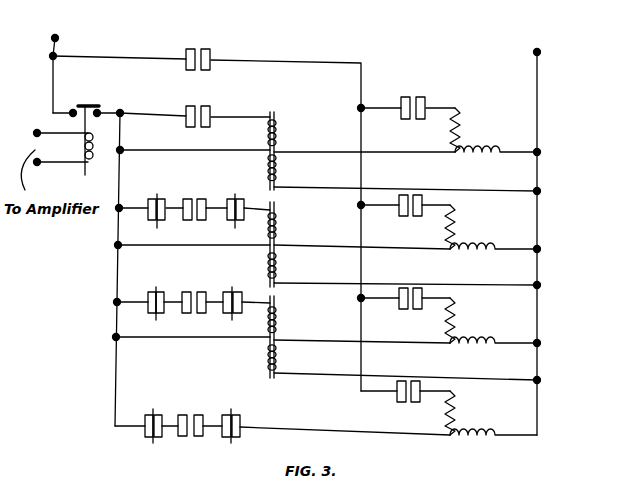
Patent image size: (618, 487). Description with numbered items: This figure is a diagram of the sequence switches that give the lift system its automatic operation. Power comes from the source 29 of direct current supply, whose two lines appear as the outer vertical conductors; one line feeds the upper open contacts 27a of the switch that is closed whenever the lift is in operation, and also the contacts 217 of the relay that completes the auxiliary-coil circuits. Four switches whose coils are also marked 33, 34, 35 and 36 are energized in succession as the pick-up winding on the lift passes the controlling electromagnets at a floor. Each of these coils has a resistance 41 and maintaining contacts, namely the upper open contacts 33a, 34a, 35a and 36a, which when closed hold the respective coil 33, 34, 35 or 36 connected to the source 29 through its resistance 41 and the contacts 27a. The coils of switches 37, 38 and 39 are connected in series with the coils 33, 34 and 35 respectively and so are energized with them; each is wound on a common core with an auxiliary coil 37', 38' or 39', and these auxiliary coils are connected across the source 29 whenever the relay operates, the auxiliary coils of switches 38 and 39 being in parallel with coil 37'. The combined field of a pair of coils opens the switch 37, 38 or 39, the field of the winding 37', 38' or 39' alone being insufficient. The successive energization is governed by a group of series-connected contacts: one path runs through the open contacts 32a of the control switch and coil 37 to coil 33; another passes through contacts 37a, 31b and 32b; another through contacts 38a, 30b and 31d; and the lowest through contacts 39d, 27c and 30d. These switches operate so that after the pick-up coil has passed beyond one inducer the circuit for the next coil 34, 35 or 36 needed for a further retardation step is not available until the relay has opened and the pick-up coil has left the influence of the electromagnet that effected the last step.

The source of direct current supply 29 is at (55, 38).
The switch 217 is at (101, 101).
The upper open contacts of switch 27 27a is at (213, 40).
The open contacts of control switch 32 32a is at (207, 100).
The operating coil of switch 37 is at (361, 136).
The auxiliary coil 37' is at (328, 170).
The switch 37a is at (148, 202).
The switch 31b is at (204, 193).
The variable condenser 32b is at (246, 216).
The operating coil of switch 38 is at (359, 231).
The auxiliary coil 38' is at (327, 265).
The switch 38a is at (148, 294).
The switch 30b is at (197, 292).
The variable condenser 31d is at (233, 292).
The operating coil of switch 39 is at (359, 322).
The auxiliary coil 39' is at (326, 358).
The variable condenser 39d is at (145, 418).
The switch 27c is at (195, 414).
The variable condenser 30d is at (242, 425).
The upper open contacts of switch 33 33a is at (415, 95).
The resistance 41 is at (461, 120).
The switch 33 coil 33 is at (477, 160).
The maintaining contacts of switch 34 34a is at (406, 217).
The switch 34 coil 34 is at (468, 256).
The maintaining contacts of switch 35 35a is at (403, 311).
The switch 35 coil 35 is at (470, 350).
The maintaining contacts of switch 36 36a is at (407, 404).
The switch 36 coil 36 is at (470, 441).